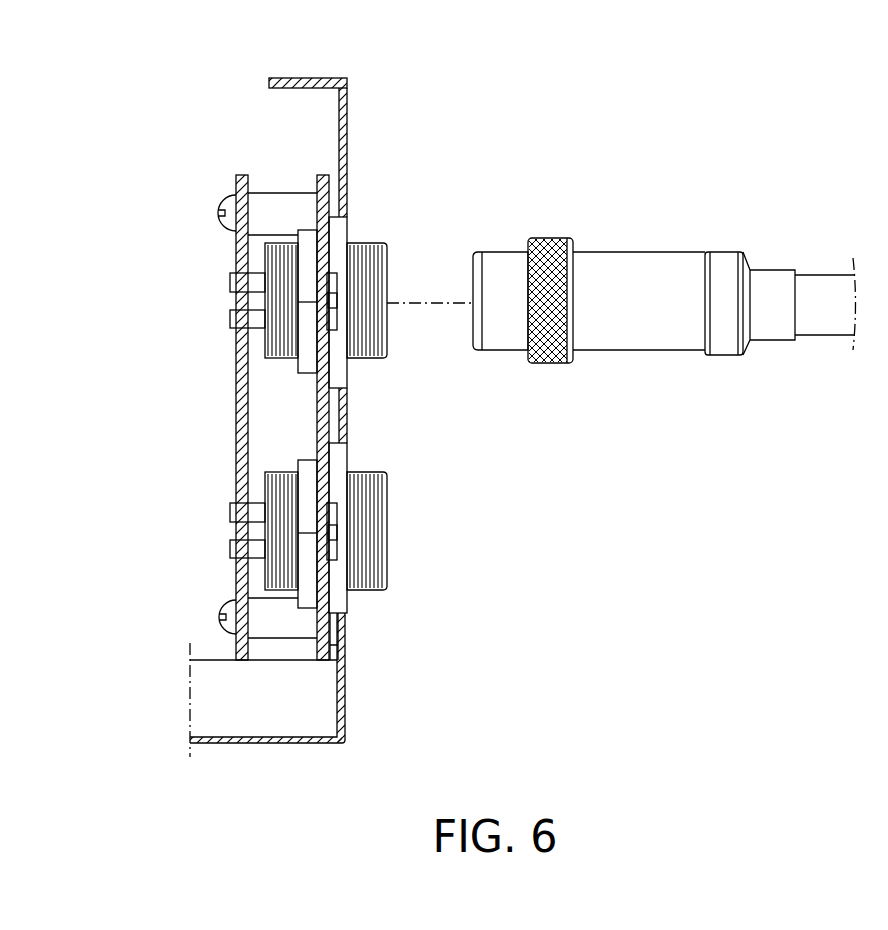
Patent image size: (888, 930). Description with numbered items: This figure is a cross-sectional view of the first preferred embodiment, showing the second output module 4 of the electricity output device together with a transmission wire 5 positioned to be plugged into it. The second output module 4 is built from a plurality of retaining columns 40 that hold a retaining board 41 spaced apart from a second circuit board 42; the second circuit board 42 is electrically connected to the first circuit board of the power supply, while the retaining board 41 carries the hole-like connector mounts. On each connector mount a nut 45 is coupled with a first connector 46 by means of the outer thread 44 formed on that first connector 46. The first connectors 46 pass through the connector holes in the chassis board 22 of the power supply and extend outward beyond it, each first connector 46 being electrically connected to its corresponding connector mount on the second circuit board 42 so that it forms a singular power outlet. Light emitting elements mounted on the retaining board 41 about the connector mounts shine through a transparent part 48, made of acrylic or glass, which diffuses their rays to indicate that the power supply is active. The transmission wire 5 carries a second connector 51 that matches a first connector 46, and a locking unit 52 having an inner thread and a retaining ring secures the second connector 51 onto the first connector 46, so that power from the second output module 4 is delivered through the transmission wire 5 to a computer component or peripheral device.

The second output module 4 is at (206, 303).
The transmission wire 5 is at (662, 267).
The chassis board 22 is at (347, 133).
The retaining column 40 is at (273, 615).
The retaining board 41 is at (314, 182).
The second circuit board 42 is at (240, 447).
The outer thread 44 is at (367, 470).
The nut 45 is at (307, 328).
The first connector 46 is at (277, 572).
The transparent part 48 is at (345, 615).
The second connector 51 is at (505, 253).
The locking unit 52 is at (557, 343).